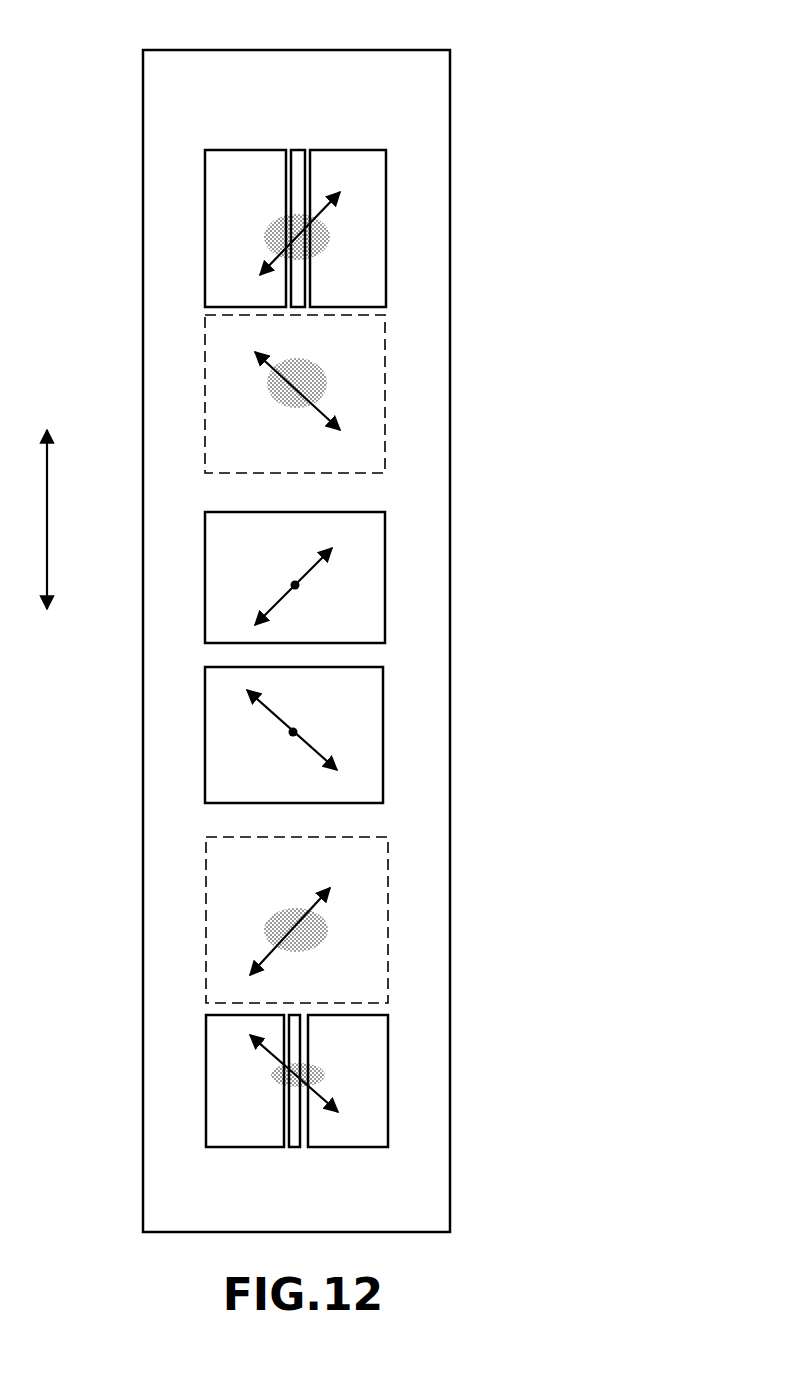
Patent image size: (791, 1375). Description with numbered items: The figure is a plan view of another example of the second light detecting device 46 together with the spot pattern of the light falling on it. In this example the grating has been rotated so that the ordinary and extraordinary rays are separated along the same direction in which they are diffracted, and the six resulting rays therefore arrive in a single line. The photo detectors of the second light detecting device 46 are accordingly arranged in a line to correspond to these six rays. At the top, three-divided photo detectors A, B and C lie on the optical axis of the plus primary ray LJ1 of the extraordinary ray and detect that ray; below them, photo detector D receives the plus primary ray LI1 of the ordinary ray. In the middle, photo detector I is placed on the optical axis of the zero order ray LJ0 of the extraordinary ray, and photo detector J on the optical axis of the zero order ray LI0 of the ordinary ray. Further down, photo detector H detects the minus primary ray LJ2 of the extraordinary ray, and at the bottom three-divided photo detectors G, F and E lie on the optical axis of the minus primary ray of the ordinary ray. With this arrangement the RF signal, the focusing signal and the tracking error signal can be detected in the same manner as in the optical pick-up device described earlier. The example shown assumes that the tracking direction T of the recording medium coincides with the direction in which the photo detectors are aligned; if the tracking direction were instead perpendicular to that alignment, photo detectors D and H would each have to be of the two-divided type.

The second light detecting device 46 is at (388, 50).
The photo detector A is at (248, 163).
The photo detector B is at (298, 163).
The photo detector C is at (350, 163).
The photo detector D is at (377, 402).
The photo detector I is at (372, 598).
The photo detector J is at (363, 739).
The photo detector H is at (365, 922).
The photo detector G is at (246, 1137).
The photo detector F is at (296, 1140).
The photo detector E is at (351, 1137).
The + primary ray of the extraordinary ray LJ1 is at (270, 238).
The + primary ray of the ordinary ray LI1 is at (277, 385).
The 0 order ray of the extraordinary ray LJ0 is at (295, 585).
The 0 order ray of the ordinary ray LI0 is at (293, 732).
The − primary ray of the extraordinary ray LJ2 is at (268, 927).
The tracking direction T is at (34, 519).